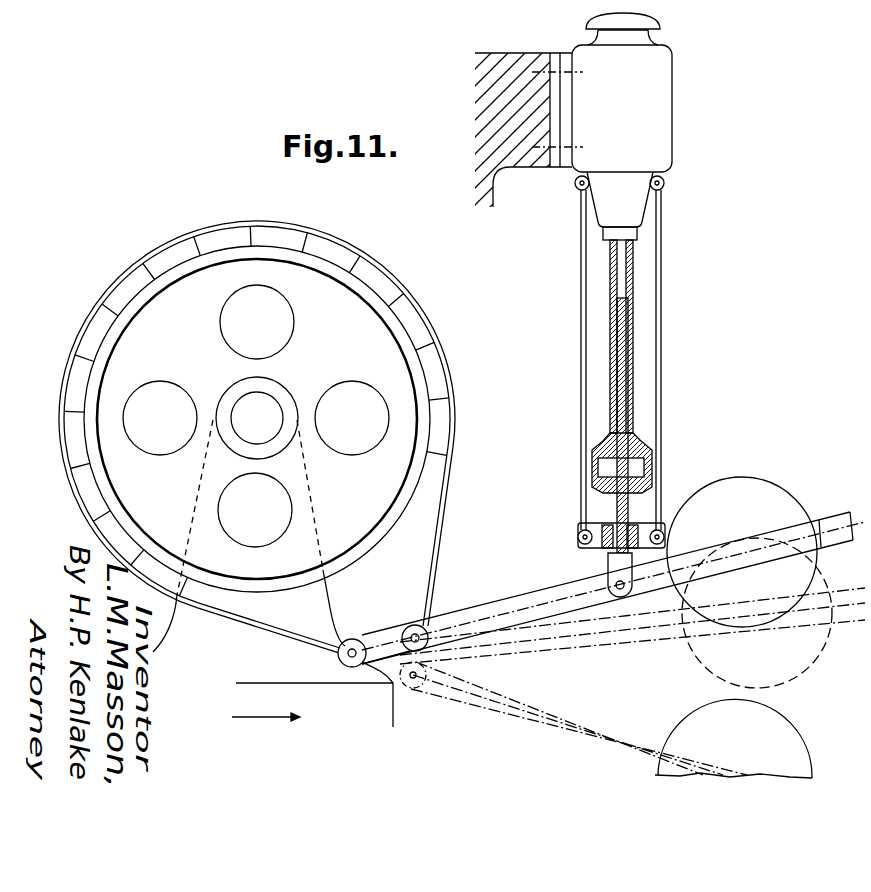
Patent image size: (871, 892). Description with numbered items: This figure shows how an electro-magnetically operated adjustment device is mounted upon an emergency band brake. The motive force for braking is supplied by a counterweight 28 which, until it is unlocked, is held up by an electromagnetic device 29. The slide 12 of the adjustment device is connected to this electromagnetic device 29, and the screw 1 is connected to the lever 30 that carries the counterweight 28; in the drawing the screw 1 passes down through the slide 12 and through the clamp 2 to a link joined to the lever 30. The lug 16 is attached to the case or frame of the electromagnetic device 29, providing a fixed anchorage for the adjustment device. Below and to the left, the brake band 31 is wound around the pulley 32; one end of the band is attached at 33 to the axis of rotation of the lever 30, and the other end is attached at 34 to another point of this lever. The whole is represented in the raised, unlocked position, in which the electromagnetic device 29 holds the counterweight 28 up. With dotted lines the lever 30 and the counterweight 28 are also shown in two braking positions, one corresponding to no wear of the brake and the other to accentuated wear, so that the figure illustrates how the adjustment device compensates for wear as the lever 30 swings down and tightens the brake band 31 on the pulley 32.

The screw 1 is at (622, 363).
The clamp nut 2 is at (642, 467).
The slide 12 is at (636, 283).
The lug 16 is at (597, 542).
The counterweight 28 is at (750, 482).
The electromagnetic device 29 is at (653, 128).
The lever 30 is at (590, 597).
The brake band 31 is at (441, 541).
The pulley 32 is at (257, 414).
The attachment point at lever axis 33 is at (343, 652).
The attachment point on lever 34 is at (422, 625).